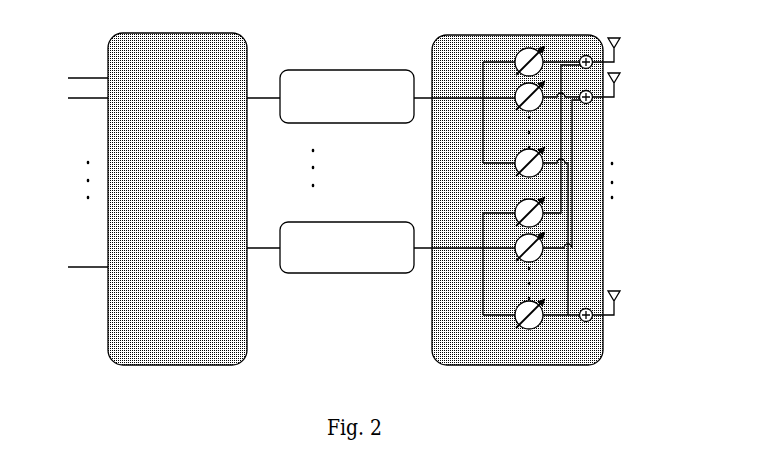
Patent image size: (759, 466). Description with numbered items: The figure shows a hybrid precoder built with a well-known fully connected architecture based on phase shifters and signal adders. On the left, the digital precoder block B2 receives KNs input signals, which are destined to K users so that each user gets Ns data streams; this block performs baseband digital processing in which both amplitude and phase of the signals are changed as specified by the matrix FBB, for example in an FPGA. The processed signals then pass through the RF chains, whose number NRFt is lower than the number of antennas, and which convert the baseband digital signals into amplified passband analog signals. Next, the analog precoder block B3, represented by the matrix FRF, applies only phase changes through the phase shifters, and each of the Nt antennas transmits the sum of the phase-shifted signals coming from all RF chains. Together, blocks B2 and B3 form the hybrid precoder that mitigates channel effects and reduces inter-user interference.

The digital precoder block B2 is at (131, 57).
The analog precoder block B3 is at (449, 57).
The digital precoding matrix FBB is at (171, 248).
The analog precoding matrix FRF is at (518, 188).
The number of input signals KNs is at (72, 172).
The number of RF chains NRFt is at (347, 171).
The number of transmit antennas Nt is at (622, 176).